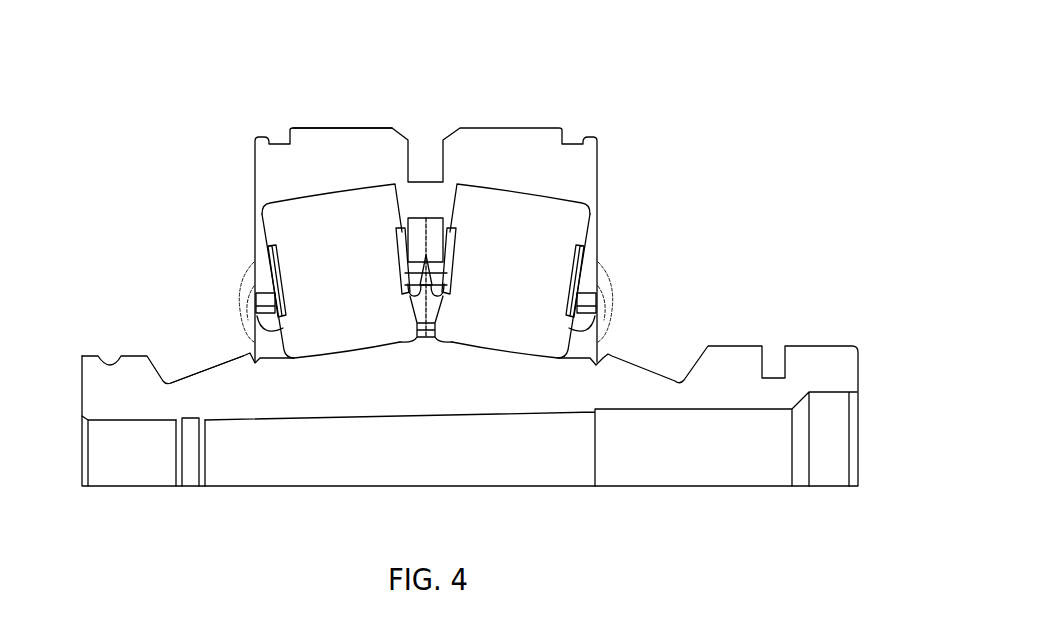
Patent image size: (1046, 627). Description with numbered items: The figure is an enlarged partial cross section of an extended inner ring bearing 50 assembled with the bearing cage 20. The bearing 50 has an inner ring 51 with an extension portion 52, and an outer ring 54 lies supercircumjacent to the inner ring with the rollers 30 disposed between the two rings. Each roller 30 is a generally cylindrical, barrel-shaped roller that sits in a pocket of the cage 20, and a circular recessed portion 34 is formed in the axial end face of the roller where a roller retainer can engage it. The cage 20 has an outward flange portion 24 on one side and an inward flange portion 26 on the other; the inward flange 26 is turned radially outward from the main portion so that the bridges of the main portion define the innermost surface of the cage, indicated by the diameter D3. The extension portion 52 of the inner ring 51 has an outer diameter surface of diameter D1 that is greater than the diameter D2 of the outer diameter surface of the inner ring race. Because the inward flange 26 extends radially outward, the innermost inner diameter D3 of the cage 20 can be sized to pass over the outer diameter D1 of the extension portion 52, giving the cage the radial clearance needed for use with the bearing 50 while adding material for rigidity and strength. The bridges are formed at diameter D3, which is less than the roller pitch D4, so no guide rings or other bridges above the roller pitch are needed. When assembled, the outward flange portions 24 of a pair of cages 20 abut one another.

The cage 20 is at (256, 336).
The outward flange portion 24 is at (417, 238).
The inward flange portion 26 is at (264, 298).
The roller 30 is at (292, 210).
The recessed portion 34 is at (270, 282).
The extended inner ring bearing 50 is at (124, 356).
The inner ring 51 is at (186, 396).
The extension portion 52 is at (195, 368).
The outer ring 54 is at (325, 155).
The diameter of the inner ring extension outer surface D1 is at (858, 346).
The diameter of the inner ring race outer surface D2 is at (600, 359).
The innermost inner diameter of the cage D3 is at (575, 339).
The roller pitch D4 is at (492, 257).